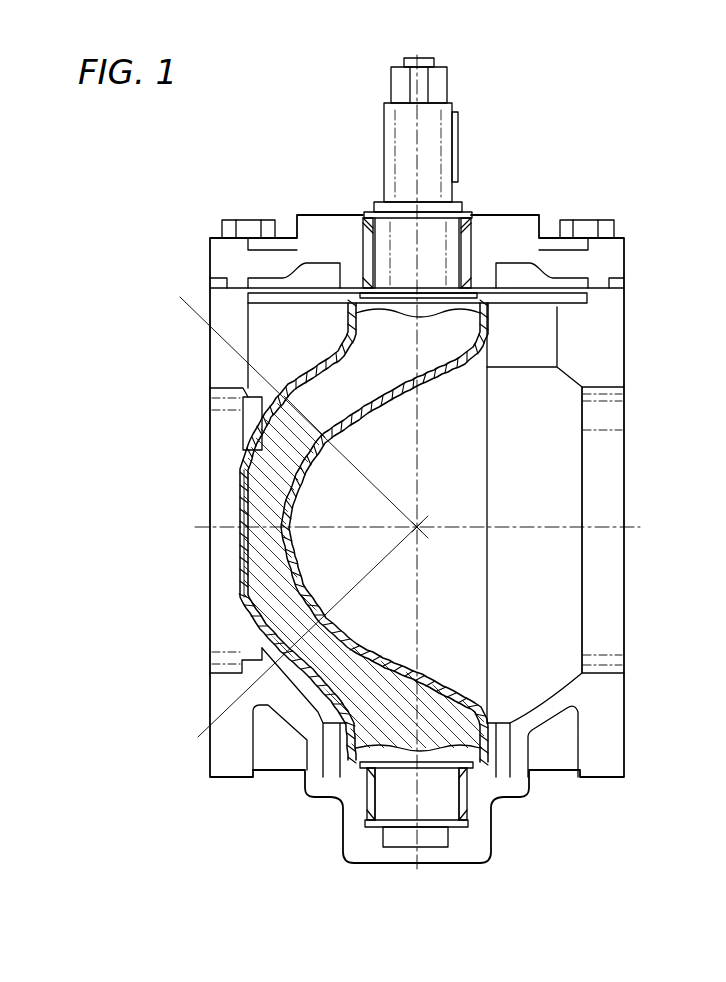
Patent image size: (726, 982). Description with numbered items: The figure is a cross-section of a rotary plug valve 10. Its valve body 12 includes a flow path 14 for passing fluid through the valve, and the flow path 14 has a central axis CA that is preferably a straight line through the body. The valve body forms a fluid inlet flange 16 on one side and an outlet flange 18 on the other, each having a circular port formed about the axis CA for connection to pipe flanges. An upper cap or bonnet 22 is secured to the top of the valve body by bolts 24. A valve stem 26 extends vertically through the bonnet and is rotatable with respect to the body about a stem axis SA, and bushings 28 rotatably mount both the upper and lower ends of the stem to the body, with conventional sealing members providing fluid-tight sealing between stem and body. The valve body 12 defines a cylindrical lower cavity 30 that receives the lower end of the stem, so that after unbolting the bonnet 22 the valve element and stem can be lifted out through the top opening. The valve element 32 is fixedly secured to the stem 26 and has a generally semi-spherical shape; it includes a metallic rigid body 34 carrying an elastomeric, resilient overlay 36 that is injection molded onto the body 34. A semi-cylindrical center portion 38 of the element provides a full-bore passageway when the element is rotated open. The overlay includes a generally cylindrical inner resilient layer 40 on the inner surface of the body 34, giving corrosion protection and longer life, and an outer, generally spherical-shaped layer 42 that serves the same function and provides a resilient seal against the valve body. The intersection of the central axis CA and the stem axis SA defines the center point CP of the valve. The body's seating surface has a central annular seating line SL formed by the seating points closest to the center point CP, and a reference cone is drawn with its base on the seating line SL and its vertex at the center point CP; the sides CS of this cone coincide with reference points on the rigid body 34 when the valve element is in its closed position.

The rotary plug valve 10 is at (178, 647).
The valve body 12 is at (615, 747).
The flow path 14 is at (543, 481).
The fluid inlet flange 16 is at (210, 373).
The outlet flange 18 is at (618, 362).
The bonnet 22 is at (507, 220).
The bolts 24 is at (590, 218).
The valve stem 26 is at (385, 138).
The bushings 28 is at (362, 238).
The cylindrical lower cavity 30 is at (363, 825).
The valve element 32 is at (414, 650).
The rigid body 34 is at (353, 663).
The overlay 36 is at (238, 498).
The semi-cylindrical center portion 38 is at (343, 512).
The inner resilient layer 40 is at (443, 685).
The outer spherical-shaped layer 42 is at (253, 610).
The sides of the reference cone CS is at (190, 310).
The central annular seating line SL is at (240, 457).
The stem axis SA is at (420, 443).
The center point CP is at (420, 531).
The central axis CA is at (637, 527).